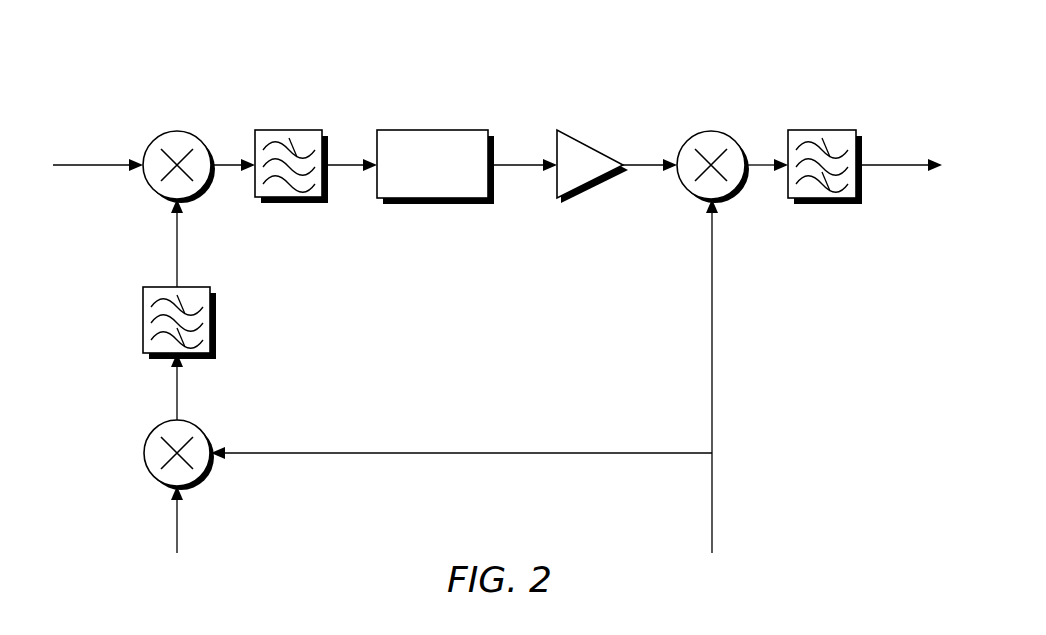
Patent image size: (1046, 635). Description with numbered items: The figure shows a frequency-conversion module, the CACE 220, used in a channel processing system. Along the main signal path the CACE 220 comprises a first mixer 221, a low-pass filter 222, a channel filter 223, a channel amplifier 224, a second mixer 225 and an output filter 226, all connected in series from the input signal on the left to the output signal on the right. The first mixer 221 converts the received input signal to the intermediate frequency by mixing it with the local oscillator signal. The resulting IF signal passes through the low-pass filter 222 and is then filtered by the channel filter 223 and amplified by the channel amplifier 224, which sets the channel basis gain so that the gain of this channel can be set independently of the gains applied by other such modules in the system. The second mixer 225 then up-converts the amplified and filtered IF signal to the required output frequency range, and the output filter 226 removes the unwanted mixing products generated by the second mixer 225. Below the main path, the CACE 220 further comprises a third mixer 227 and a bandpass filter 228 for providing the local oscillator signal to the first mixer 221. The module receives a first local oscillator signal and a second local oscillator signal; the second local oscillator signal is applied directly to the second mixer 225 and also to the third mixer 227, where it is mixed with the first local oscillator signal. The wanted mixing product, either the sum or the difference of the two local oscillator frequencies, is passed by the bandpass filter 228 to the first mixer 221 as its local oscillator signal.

The CACE 220 is at (838, 449).
The first mixer 221 is at (178, 131).
The low-pass filter 222 is at (290, 130).
The channel filter 223 is at (440, 130).
The channel amplifier 224 is at (583, 140).
The second mixer 225 is at (712, 131).
The output filter 226 is at (822, 130).
The third mixer 227 is at (205, 432).
The bandpass filter 228 is at (211, 325).